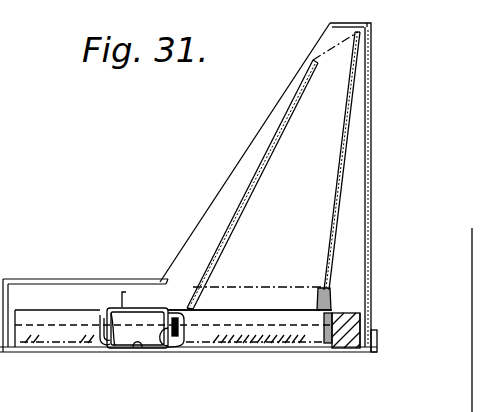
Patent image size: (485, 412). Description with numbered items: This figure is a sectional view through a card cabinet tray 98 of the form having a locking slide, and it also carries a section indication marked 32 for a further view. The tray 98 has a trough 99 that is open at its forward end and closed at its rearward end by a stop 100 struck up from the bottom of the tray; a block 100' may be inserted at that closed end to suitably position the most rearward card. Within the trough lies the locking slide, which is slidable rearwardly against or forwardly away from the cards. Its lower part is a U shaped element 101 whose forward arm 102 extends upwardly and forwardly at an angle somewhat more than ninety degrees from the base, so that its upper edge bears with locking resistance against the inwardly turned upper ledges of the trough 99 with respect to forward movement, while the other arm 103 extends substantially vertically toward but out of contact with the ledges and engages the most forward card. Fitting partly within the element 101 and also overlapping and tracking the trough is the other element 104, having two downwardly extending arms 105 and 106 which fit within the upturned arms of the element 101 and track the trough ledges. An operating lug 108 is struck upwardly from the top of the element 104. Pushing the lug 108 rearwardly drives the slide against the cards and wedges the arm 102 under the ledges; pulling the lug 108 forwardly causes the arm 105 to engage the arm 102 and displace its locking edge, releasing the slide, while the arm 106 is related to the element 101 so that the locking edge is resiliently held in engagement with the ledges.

The tray 98 is at (370, 354).
The trough 99 is at (243, 308).
The stop 100 is at (343, 172).
The block 100' is at (332, 362).
The U shaped element 101 is at (138, 346).
The forward arm 102 is at (103, 328).
The other arm 103 is at (178, 334).
The other element 104 is at (162, 283).
The downwardly extending arm 105 is at (116, 348).
The downwardly extending arm 106 is at (161, 341).
The operating lug 108 is at (125, 292).
The section line 32- 32 is at (285, 300).